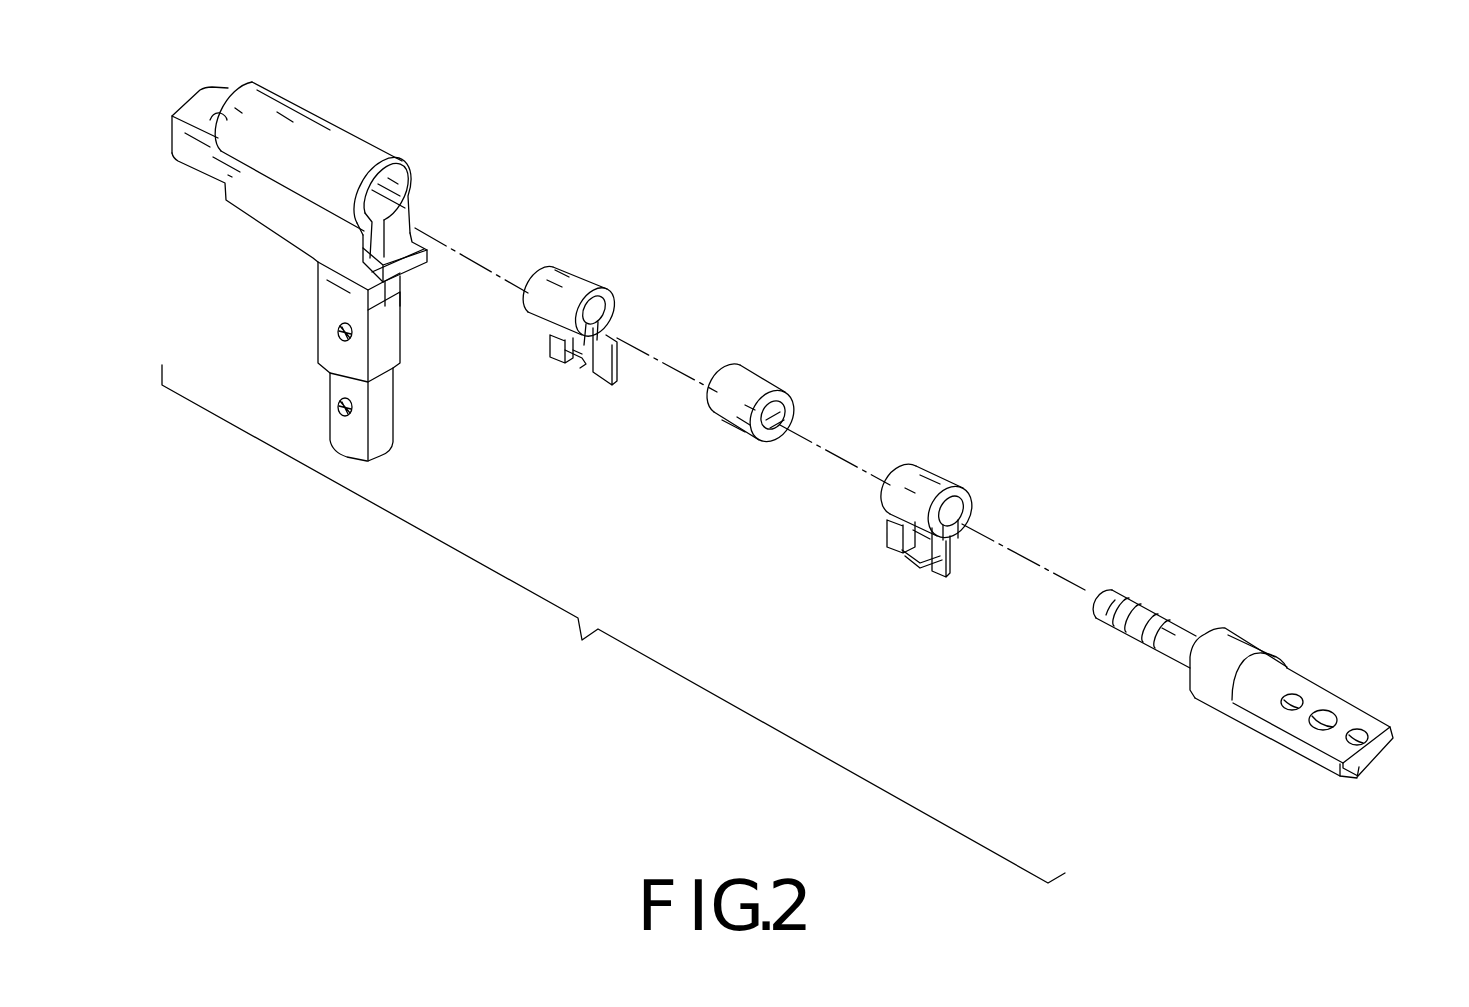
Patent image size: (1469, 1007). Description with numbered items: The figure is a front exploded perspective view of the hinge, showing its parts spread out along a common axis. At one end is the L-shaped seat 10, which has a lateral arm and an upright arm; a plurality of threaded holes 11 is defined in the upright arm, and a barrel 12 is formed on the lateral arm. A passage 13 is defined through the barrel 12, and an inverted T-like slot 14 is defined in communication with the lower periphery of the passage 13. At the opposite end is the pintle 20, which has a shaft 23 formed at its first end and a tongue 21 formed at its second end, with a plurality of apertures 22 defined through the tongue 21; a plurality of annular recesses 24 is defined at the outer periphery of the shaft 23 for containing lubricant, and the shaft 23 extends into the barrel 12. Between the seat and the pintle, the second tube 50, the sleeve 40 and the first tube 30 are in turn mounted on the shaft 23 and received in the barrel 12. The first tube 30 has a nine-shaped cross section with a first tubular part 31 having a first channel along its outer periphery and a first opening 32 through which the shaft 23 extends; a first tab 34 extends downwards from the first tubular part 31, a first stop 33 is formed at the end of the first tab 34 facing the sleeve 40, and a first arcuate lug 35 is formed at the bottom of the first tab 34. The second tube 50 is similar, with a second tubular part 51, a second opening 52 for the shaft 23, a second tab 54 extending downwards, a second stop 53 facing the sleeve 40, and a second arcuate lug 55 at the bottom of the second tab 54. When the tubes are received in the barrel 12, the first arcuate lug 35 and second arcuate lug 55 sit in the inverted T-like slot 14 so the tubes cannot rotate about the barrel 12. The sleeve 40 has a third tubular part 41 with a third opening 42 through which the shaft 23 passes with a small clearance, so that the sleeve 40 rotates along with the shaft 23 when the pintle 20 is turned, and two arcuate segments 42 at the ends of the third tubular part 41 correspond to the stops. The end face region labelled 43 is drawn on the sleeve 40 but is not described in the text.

The L-shaped seat 10 is at (330, 263).
The threaded holes 11 is at (338, 333).
The barrel 12 is at (300, 117).
The passage 13 is at (395, 188).
The inverted T-like slot 14 is at (392, 250).
The pintle 20 is at (1226, 665).
The tongue 21 is at (1353, 717).
The apertures 22 is at (1320, 713).
The shaft 23 is at (1103, 613).
The annular recesses 24 is at (1113, 598).
The first tube 30 is at (963, 494).
The first tubular part 31 is at (923, 473).
The first opening 32 is at (957, 508).
The first stop 33 is at (890, 517).
The first tab 34 is at (950, 573).
The first arcuate lug 35 is at (915, 562).
The sleeve 40 is at (761, 406).
The third tubular part 41 is at (735, 430).
The third opening / arcuate segments 42 is at (710, 402).
The bore 43 is at (783, 410).
The second tube 50 is at (589, 320).
The second tubular part 51 is at (540, 305).
The second opening 52 is at (593, 303).
The second stop 53 is at (607, 323).
The second tab 54 is at (600, 382).
The second arcuate lug 55 is at (577, 367).